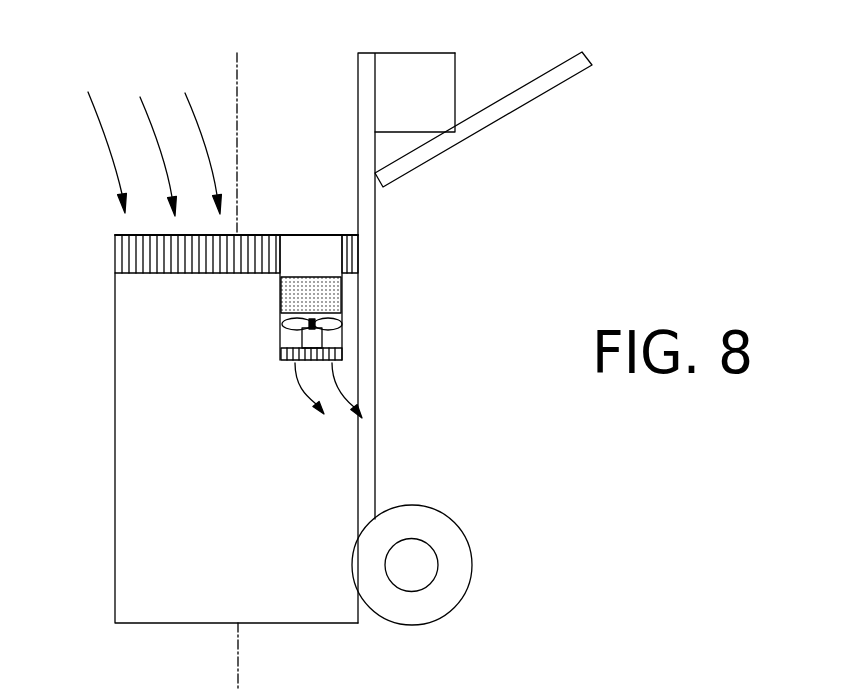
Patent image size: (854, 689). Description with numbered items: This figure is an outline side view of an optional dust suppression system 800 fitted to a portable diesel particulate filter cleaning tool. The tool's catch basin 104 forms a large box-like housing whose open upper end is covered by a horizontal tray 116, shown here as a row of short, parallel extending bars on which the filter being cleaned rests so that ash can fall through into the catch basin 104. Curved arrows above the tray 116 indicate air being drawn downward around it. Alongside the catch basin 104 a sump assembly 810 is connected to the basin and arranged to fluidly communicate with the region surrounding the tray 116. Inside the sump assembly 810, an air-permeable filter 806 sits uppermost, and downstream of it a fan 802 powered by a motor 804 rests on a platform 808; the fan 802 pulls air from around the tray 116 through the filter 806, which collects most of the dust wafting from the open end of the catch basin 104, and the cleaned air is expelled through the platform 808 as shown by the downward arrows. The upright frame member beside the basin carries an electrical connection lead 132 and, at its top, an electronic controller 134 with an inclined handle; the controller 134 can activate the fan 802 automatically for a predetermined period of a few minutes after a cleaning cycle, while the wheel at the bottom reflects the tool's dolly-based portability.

The catch basin 104 is at (153, 448).
The horizontal tray 116 is at (115, 250).
The electrical connection lead 132 is at (307, 255).
The electronic controller 134 is at (440, 77).
The dust suppression system 800 is at (398, 231).
The fan 802 is at (320, 324).
The motor 804 is at (317, 337).
The filter 806 is at (317, 292).
The platform 808 is at (333, 358).
The sump assembly 810 is at (44, 683).